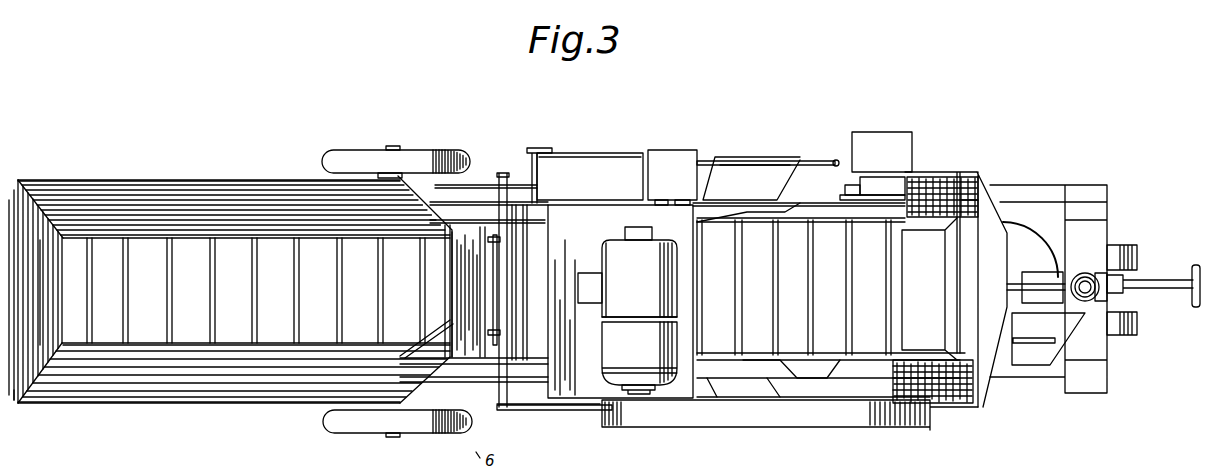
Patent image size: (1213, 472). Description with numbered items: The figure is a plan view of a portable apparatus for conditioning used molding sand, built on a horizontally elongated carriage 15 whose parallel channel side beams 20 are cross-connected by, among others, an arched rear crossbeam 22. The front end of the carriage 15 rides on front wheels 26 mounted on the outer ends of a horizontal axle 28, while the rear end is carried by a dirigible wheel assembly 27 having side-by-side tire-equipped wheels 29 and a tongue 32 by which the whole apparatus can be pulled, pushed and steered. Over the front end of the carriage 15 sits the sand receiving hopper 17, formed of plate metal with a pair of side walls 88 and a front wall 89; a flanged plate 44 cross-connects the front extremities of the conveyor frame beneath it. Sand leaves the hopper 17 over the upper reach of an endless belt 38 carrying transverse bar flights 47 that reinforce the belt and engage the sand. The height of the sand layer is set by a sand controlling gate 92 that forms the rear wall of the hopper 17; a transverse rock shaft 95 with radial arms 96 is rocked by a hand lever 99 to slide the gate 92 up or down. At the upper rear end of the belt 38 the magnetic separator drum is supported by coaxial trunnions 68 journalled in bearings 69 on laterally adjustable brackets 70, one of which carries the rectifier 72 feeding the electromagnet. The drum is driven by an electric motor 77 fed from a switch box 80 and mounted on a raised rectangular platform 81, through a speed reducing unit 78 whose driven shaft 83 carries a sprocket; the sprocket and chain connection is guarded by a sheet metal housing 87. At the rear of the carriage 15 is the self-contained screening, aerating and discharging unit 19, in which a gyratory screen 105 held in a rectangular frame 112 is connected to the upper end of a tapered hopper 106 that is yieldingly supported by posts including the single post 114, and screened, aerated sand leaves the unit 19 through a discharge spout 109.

The carriage 15 is at (492, 178).
The sand receiving hopper 17 is at (184, 174).
The self-contained sand screening, aerating and discharging unit 19 is at (996, 169).
The side beams 20 is at (480, 398).
The rear crossbeam 22 is at (1100, 228).
The front wheels 26 is at (435, 152).
The dirigible wheel assembly 27 is at (1146, 328).
The axle 28 is at (402, 148).
The wheels 29 is at (1137, 246).
The tongue 32 is at (1162, 288).
The endless belt 38 is at (190, 330).
The flanged plate 44 is at (12, 393).
The flights 47 is at (246, 308).
The trunnions 68 is at (856, 172).
The bearings 69 is at (866, 186).
The brackets 70 is at (810, 200).
The rectifier 72 is at (913, 142).
The electric motor 77 is at (639, 272).
The speed reducing unit 78 is at (639, 351).
The switch box 80 is at (672, 177).
The platform 81 is at (620, 301).
The driven shaft 83 is at (640, 394).
The sheet metal housing 87 is at (702, 426).
The side walls 88 is at (116, 181).
The front wall 89 is at (45, 301).
The sand controlling gate 92 is at (463, 317).
The rock shaft 95 is at (505, 312).
The arms 96 is at (500, 245).
The hand lever 99 is at (548, 404).
The gyratory screen 105 is at (975, 205).
The hopper 106 is at (990, 220).
The discharge spout 109 is at (1032, 366).
The rectangular frame 112 is at (947, 172).
The post 114 is at (1012, 275).